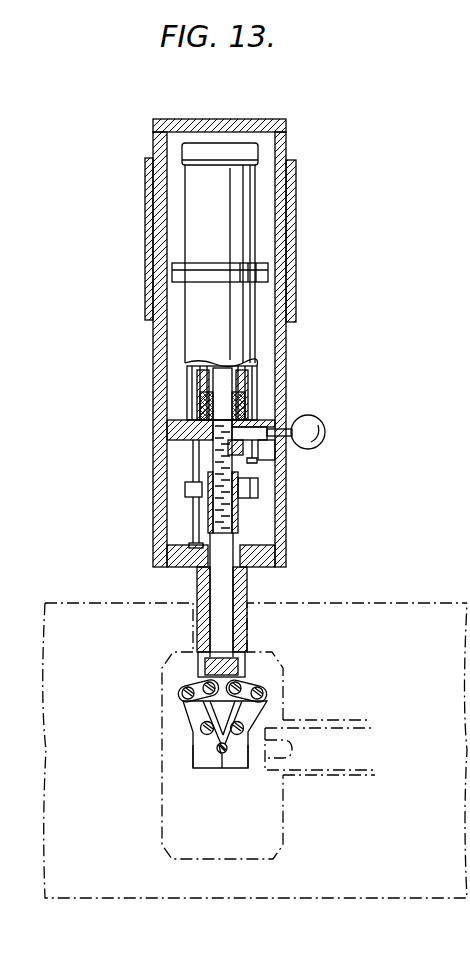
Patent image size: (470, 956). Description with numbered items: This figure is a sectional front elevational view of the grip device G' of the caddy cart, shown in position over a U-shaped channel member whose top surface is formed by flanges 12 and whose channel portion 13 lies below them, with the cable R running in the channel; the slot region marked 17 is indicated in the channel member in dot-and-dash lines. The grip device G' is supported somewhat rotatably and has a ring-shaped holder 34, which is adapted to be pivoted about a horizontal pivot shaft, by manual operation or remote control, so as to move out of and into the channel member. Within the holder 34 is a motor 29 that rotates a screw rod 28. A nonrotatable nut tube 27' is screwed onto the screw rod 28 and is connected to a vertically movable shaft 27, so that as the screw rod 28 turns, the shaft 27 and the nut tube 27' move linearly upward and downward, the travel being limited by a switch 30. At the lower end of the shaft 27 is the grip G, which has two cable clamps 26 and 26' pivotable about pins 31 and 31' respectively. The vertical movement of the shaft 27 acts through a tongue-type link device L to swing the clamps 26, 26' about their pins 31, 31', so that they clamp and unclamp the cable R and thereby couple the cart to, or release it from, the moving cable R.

The flange 12 is at (153, 613).
The channel portion 13 is at (172, 839).
The slot 17-17b (18-18c) 17 is at (328, 735).
The cable clamp 26 is at (190, 774).
The cable clamp 26' is at (255, 774).
The vertically movable shaft 27 is at (263, 622).
The nonrotatable nut tube 27' is at (269, 512).
The screw rod 28 is at (276, 466).
The motor 29 is at (225, 190).
The switch 30 is at (188, 493).
The pin 31 is at (160, 735).
The pin 31' is at (276, 708).
The ring-shaped holder 34 is at (290, 236).
The grip G is at (192, 732).
The grip device G' is at (179, 424).
The tongue-type link device L is at (256, 672).
The cable R is at (218, 750).